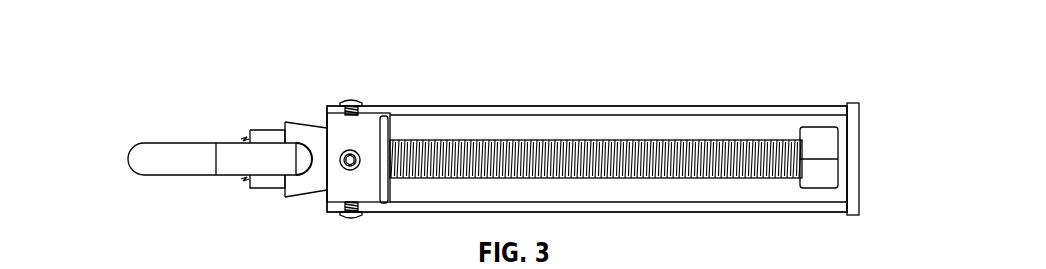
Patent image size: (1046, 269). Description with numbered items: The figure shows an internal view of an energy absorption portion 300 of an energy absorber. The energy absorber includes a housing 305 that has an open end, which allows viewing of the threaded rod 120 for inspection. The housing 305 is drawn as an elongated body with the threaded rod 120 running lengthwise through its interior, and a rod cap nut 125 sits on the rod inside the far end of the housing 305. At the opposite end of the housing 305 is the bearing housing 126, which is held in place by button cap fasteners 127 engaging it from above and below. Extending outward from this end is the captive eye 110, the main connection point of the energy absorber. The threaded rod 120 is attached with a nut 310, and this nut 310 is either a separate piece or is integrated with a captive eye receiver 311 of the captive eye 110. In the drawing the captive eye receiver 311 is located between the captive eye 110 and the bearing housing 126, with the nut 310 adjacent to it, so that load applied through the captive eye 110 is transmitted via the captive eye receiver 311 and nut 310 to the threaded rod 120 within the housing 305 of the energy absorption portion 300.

The energy absorption portion 300 is at (755, 62).
The housing 305 is at (642, 105).
The bearing housing 126 is at (368, 118).
The button cap fasteners 127 is at (343, 103).
The threaded rod 120 is at (450, 140).
The rod cap nut 125 is at (822, 127).
The captive eye 110 is at (128, 150).
The nut 310 is at (257, 128).
The captive eye receiver 311 is at (312, 167).